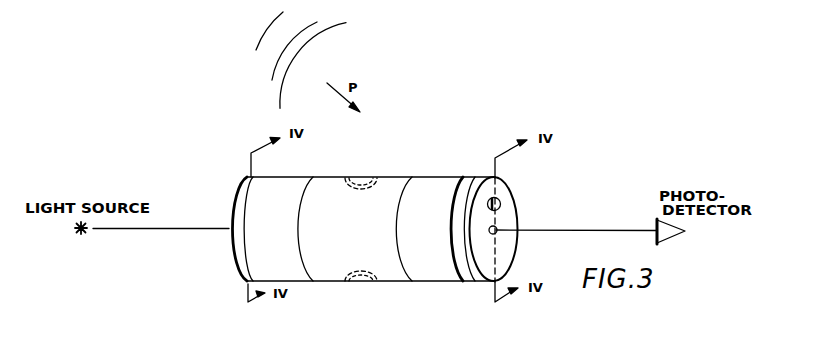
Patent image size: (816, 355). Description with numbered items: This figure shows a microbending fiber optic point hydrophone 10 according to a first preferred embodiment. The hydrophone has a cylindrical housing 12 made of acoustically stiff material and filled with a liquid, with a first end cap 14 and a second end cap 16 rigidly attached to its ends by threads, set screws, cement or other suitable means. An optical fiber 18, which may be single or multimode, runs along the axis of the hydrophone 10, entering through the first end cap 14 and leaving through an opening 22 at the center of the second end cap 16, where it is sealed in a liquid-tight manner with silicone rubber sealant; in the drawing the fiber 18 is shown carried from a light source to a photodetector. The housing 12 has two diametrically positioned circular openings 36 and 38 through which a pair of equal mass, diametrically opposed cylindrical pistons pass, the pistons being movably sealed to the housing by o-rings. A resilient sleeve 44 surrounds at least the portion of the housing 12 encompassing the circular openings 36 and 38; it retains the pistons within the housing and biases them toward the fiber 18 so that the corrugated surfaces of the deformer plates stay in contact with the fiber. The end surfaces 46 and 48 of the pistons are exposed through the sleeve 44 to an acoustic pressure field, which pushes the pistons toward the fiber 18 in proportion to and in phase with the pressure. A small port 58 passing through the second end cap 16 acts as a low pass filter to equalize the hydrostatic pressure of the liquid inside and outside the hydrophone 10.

The point hydrophone 10 is at (402, 122).
The cylindrical housing 12 is at (440, 187).
The first end cap 14 is at (232, 247).
The second end cap 16 is at (510, 255).
The optical fiber 18 is at (177, 228).
The opening 22 is at (497, 228).
The circular opening 36 is at (380, 178).
The circular opening 38 is at (385, 283).
The resilient sleeve 44 is at (357, 236).
The end surface 46 is at (363, 176).
The end surface 48 is at (358, 283).
The port 58 is at (500, 203).